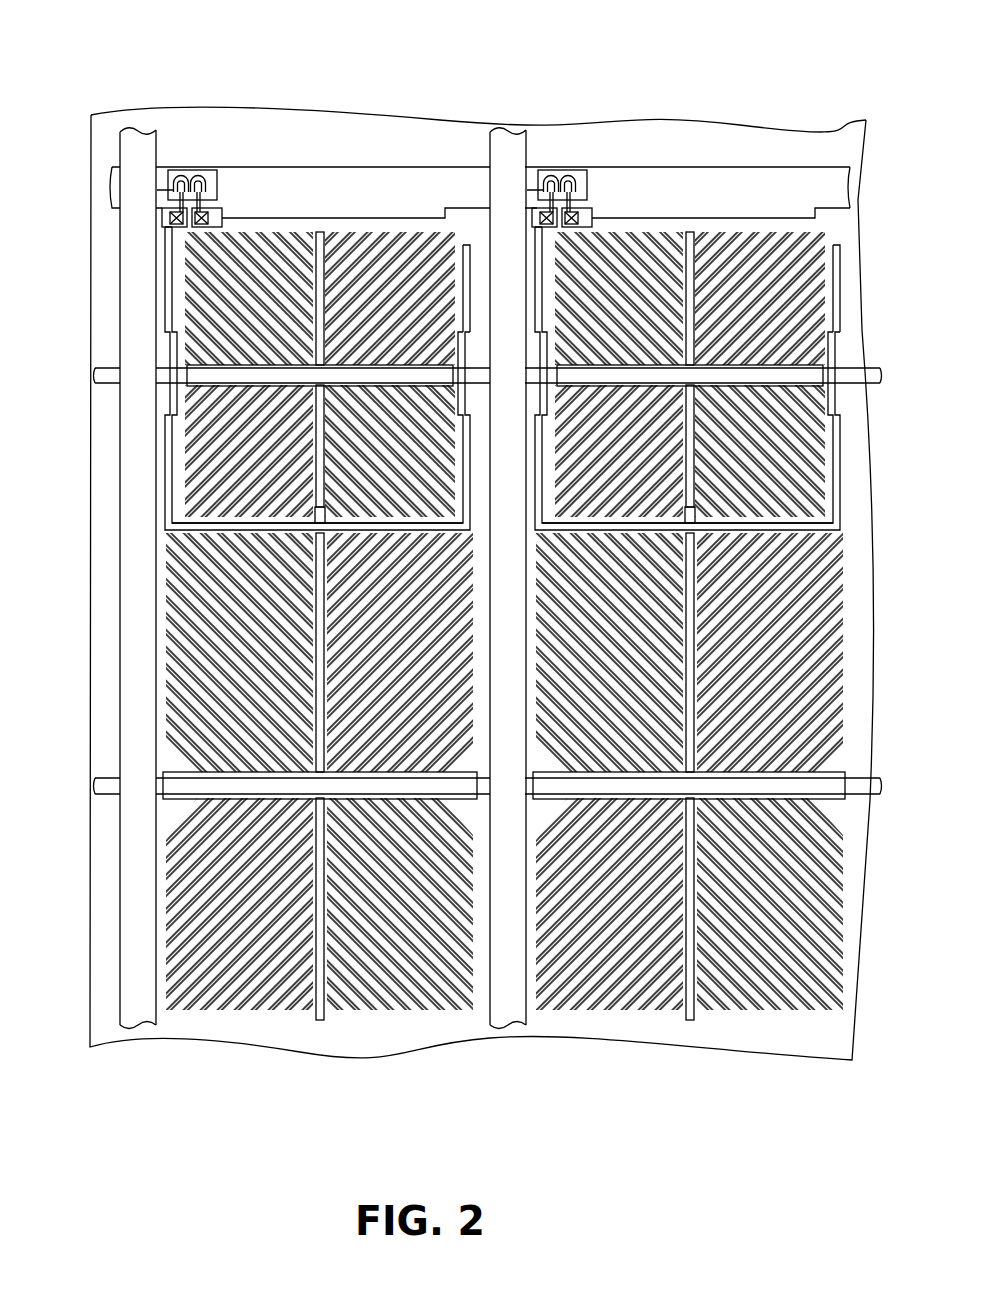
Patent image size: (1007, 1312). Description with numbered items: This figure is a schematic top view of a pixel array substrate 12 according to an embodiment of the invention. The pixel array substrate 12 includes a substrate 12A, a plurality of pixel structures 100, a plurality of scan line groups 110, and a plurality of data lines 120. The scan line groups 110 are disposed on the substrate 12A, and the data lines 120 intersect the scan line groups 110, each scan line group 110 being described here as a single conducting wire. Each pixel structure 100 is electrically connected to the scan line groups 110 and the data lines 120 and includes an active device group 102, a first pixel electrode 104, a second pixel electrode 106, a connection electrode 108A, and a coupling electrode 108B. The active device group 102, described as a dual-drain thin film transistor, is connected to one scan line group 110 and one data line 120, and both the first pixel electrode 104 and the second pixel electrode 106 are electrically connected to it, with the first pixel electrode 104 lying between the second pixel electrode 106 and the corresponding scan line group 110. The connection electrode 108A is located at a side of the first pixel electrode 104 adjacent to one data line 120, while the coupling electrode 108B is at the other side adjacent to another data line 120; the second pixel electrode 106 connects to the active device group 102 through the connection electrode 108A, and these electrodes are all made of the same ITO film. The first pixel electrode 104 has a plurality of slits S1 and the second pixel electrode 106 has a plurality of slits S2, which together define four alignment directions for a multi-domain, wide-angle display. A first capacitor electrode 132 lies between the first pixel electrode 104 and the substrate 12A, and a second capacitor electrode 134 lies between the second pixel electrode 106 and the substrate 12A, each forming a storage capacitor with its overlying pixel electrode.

The pixel array substrate 12 is at (845, 1186).
The substrate 12A is at (747, 138).
The pixel structure 100 is at (307, 170).
The active device group 102 is at (193, 163).
The first pixel electrode 104 is at (263, 233).
The second pixel electrode 106 is at (293, 523).
The connection electrode 108A is at (168, 236).
The coupling electrode 108B is at (331, 190).
The scan line group 110 is at (108, 184).
The data line 120 is at (120, 580).
The first capacitor electrode 132 is at (100, 375).
The second capacitor electrode 134 is at (100, 778).
The slits S1 is at (250, 289).
The slits S2 is at (201, 930).